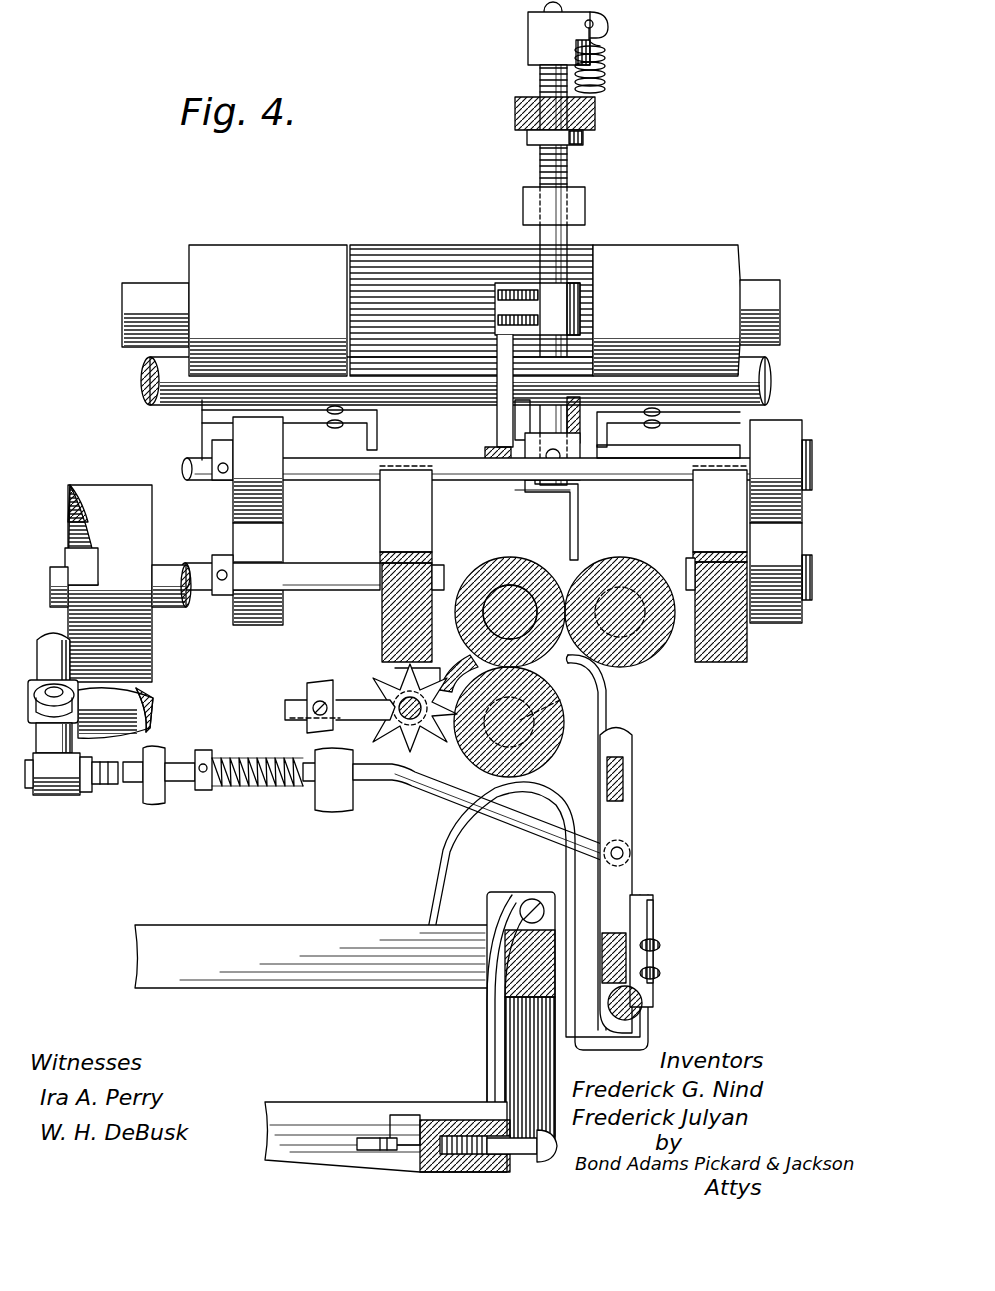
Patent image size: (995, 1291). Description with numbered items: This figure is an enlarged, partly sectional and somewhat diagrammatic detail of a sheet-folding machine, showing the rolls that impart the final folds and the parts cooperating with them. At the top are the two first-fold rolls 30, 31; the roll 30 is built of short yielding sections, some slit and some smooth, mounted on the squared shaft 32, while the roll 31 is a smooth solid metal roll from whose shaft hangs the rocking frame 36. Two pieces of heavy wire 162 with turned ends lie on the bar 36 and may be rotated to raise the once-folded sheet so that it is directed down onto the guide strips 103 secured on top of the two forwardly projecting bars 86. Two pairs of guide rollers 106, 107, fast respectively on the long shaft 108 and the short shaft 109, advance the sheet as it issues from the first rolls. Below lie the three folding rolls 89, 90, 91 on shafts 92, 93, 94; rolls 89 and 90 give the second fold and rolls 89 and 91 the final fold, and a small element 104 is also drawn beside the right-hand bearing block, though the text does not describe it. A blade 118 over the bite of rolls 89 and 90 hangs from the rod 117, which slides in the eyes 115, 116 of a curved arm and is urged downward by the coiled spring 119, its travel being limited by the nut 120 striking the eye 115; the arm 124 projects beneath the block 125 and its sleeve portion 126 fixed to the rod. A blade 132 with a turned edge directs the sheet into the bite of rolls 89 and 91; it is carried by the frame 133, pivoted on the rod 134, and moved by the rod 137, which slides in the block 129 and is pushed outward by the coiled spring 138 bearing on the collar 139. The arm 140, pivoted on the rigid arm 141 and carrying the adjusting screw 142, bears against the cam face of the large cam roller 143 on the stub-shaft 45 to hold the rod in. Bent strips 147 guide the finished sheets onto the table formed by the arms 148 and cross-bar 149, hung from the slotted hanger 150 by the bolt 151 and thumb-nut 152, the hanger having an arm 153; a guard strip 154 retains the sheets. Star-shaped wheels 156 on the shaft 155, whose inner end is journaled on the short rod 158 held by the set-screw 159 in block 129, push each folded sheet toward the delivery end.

The roll 30 is at (655, 250).
The roll 31 is at (760, 383).
The shaft 32 is at (772, 283).
The rocking frame 36 is at (212, 432).
The stub-shaft 45 is at (55, 567).
The bars 86 is at (382, 638).
The folding roll 89 is at (495, 562).
The folding roll 90 is at (618, 562).
The folding roll 91 is at (590, 735).
The shaft 92 is at (470, 642).
The shaft 93 is at (642, 575).
The shaft 94 is at (545, 705).
The guide strips 103 is at (432, 525).
The shaft collar 104 is at (688, 560).
The guide rollers 106 is at (240, 500).
The guide rollers 107 is at (280, 552).
The shaft 108 is at (652, 462).
The shaft 109 is at (330, 570).
The eye 115 is at (585, 197).
The eye 116 is at (569, 440).
The rod 117 is at (570, 238).
The blade 118 is at (572, 545).
The coiled spring 119 is at (606, 80).
The nut 120 is at (515, 112).
The arm 124 is at (485, 455).
The block 125 is at (497, 405).
The sleeve portion 126 is at (582, 296).
The block 129 is at (342, 812).
The blade 132 is at (608, 712).
The frame 133 is at (625, 890).
The rod 134 is at (642, 1003).
The rod 137 is at (450, 783).
The coiled spring 138 is at (262, 787).
The collar 139 is at (200, 790).
The arm 140 is at (63, 740).
The rigid arm 141 is at (155, 715).
The adjusting screw 142 is at (90, 785).
The cam roller 143 is at (152, 650).
The bent metal strips 147 is at (445, 875).
The arms 148 is at (385, 1095).
The cross-bar 149 is at (434, 1125).
The slotted vertical hanger 150 is at (518, 1045).
The bolt 151 is at (503, 1138).
The thumb-nut 152 is at (367, 1136).
The arm 153 is at (515, 930).
The guard strip 154 is at (292, 925).
The shaft 155 is at (388, 718).
The star shaped wheels 156 is at (415, 742).
The short rod 158 is at (292, 697).
The set-screw 159 is at (305, 720).
The heavy wire pieces 162 is at (327, 424).